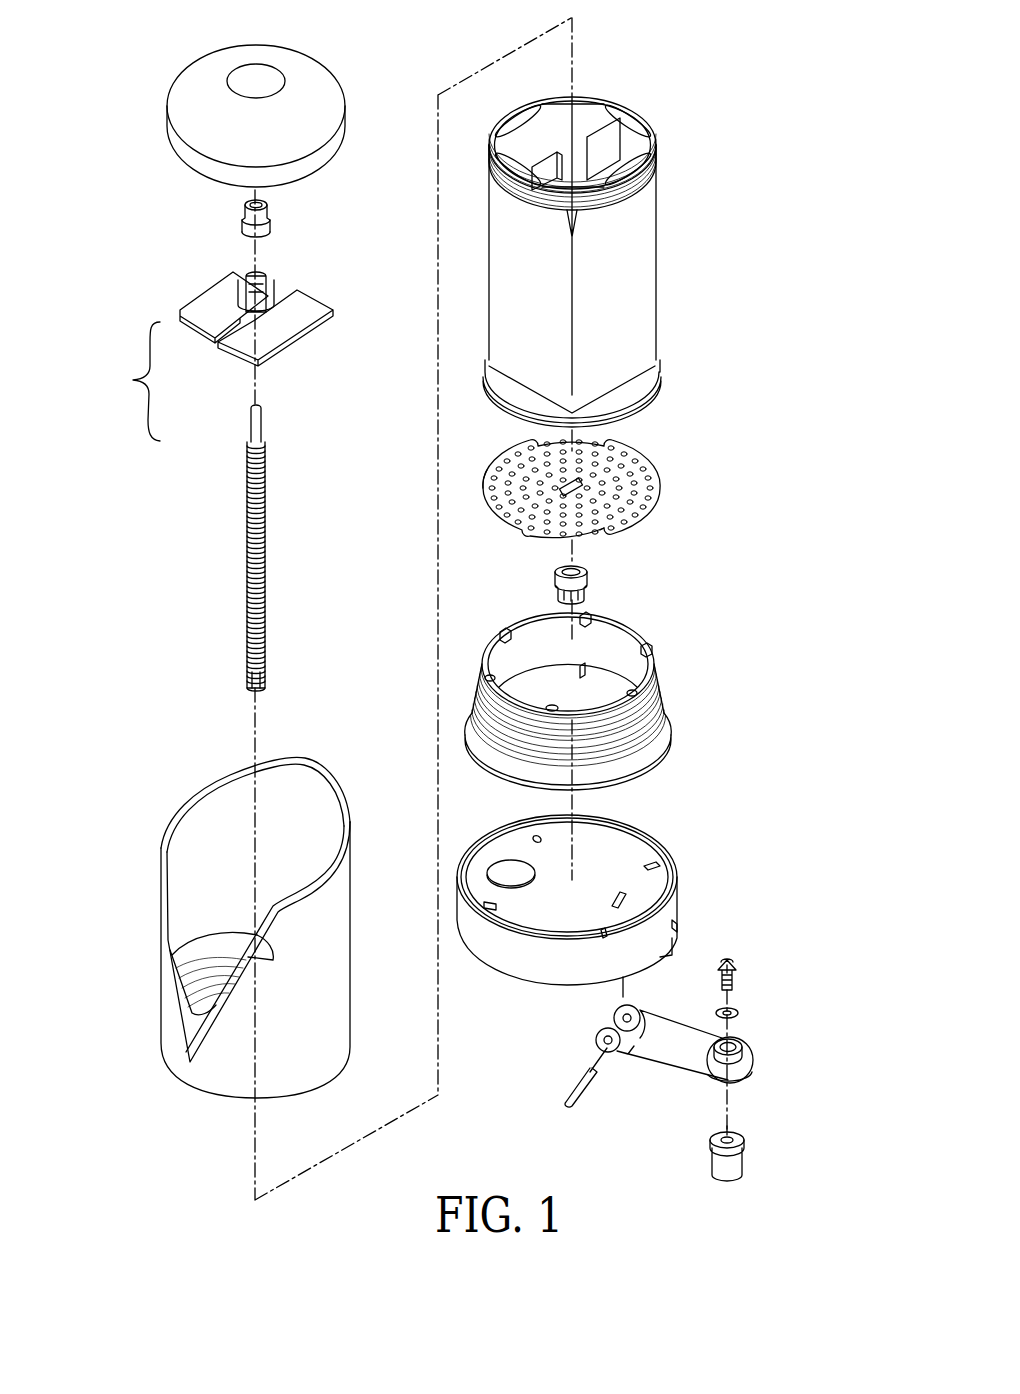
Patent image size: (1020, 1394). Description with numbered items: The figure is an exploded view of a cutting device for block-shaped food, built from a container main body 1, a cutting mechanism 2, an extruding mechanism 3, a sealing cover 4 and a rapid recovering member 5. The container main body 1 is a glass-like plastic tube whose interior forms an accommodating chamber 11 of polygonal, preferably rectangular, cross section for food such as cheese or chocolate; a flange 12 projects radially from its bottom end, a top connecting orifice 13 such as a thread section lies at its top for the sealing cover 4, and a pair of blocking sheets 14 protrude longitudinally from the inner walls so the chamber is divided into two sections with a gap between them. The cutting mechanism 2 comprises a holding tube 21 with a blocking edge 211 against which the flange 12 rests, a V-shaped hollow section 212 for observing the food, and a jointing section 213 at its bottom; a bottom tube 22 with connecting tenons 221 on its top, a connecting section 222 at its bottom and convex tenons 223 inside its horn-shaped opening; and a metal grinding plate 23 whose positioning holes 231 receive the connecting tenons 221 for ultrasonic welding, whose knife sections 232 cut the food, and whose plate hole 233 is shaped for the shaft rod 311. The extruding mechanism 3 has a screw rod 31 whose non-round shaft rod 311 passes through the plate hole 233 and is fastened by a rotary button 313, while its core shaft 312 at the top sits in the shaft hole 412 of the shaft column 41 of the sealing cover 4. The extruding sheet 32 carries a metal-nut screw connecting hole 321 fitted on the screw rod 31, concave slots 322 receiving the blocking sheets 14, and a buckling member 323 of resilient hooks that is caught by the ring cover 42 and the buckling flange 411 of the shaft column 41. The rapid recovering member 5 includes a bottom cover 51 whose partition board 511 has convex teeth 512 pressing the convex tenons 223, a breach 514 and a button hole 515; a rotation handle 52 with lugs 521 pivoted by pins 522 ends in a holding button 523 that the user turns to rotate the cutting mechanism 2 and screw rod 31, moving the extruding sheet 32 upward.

The container main body 1 is at (628, 219).
The accommodating chamber 11 is at (577, 123).
The flange 12 is at (660, 387).
The top connecting orifice 13 is at (653, 167).
The blocking sheets 14 is at (607, 142).
The cutting mechanism 2 is at (735, 512).
The holding tube 21 is at (236, 927).
The blocking edge 211 is at (180, 952).
The hollow section 212 is at (250, 957).
The jointing section 213 is at (198, 988).
The bottom tube 22 is at (625, 678).
The connecting tenons 221 is at (650, 642).
The connecting section 222 is at (633, 742).
The convex tenons 223 is at (583, 670).
The grinding plate 23 is at (555, 488).
The positioning holes 231 is at (487, 503).
The knife sections 232 is at (602, 532).
The plate hole 233 is at (555, 477).
The extruding mechanism 3 is at (134, 381).
The screw rod 31 is at (309, 554).
The shaft rod 311 is at (257, 690).
The core shaft 312 is at (257, 423).
The rotary button 313 is at (590, 585).
The extruding sheet 32 is at (260, 293).
The screw connecting hole 321 is at (233, 307).
The concave slots 322 is at (287, 278).
The buckling member 323 is at (240, 272).
The sealing cover 4 is at (270, 102).
The shaft column 41 is at (233, 208).
The buckling flange 411 is at (248, 230).
The shaft hole 412 is at (243, 202).
The ring cover 42 is at (318, 77).
The rapid recovering member 5 is at (737, 872).
The bottom cover 51 is at (622, 898).
The partition board 511 is at (610, 852).
The convex teeth 512 is at (650, 870).
The breach 514 is at (674, 948).
The button hole 515 is at (512, 863).
The rotation handle 52 is at (676, 1070).
The lugs 521 is at (603, 1030).
The pins 522 is at (582, 1092).
The holding button 523 is at (740, 1157).